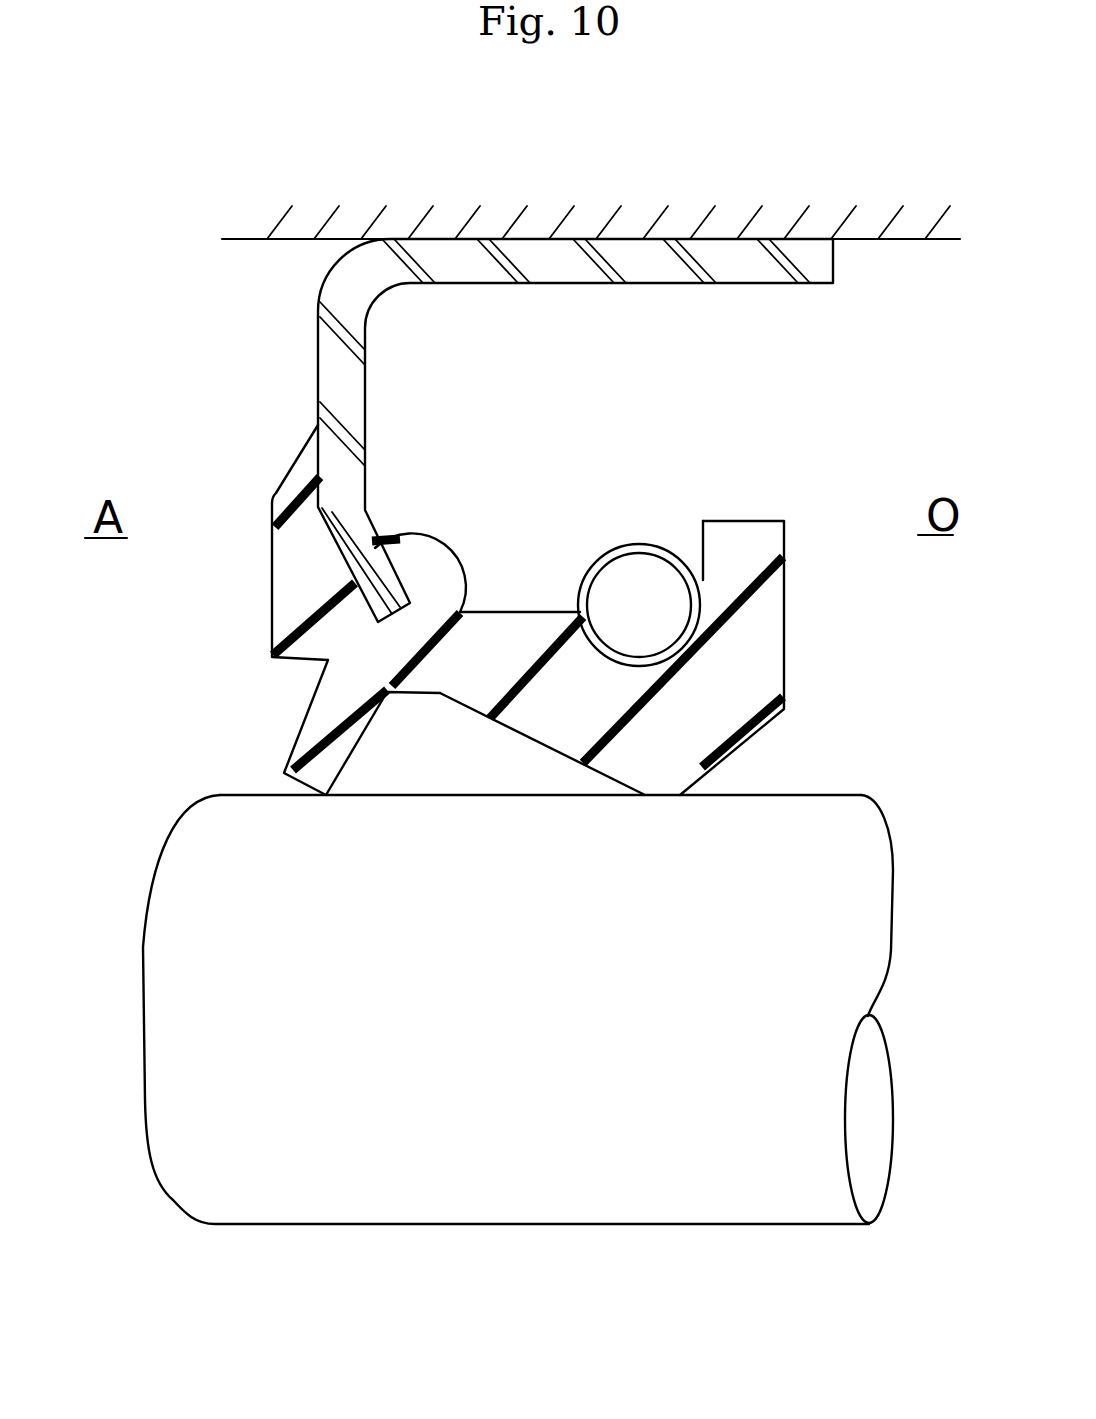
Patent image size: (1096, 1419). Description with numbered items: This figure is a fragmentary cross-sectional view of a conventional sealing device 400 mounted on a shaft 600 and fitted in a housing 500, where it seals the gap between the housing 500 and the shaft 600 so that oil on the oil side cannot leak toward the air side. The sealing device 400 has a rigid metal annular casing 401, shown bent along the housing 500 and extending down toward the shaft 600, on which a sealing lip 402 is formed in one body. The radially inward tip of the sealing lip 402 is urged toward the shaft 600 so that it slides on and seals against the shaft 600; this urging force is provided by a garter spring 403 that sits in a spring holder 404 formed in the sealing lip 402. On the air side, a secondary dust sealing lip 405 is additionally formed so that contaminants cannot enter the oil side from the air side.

The housing 500 is at (247, 239).
The sealing device 400 is at (182, 493).
The rigid annular casing 401 is at (748, 268).
The sealing lip 402 is at (703, 772).
The garter spring 403 is at (641, 571).
The spring holder 404 is at (634, 672).
The secondary sealing lip 405 is at (288, 748).
The shaft 600 is at (173, 1200).